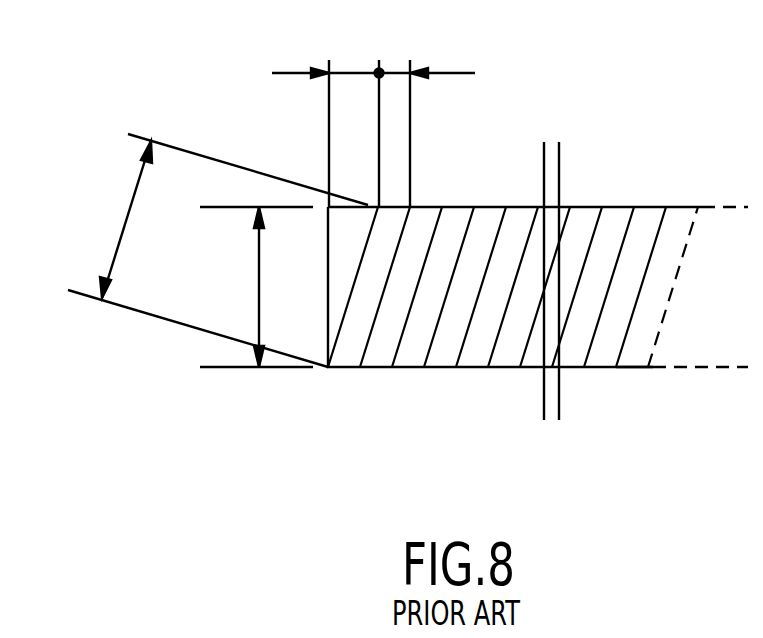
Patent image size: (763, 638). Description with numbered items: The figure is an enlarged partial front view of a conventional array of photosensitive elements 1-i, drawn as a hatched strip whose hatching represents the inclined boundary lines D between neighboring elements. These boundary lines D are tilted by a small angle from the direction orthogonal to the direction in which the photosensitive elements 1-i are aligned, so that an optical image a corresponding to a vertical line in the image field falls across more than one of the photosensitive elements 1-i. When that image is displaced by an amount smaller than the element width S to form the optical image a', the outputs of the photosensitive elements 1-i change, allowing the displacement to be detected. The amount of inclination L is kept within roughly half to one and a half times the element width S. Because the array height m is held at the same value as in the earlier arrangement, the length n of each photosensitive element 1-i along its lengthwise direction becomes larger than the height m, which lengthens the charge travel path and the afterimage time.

The photosensitive element 1-i is at (647, 215).
The boundary line D is at (627, 340).
The optical image a is at (519, 265).
The displaced optical image a' is at (590, 263).
The amount of inclination L is at (328, 121).
The element width S is at (427, 121).
The array height m is at (256, 287).
The element length n is at (218, 250).